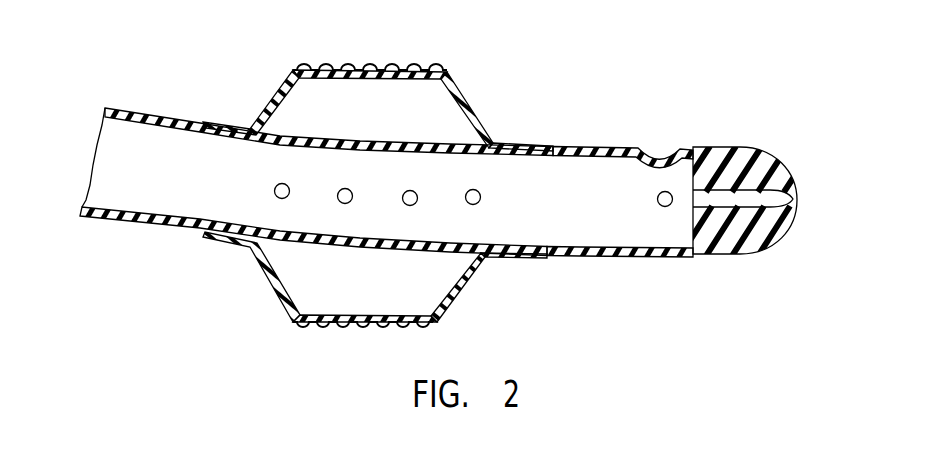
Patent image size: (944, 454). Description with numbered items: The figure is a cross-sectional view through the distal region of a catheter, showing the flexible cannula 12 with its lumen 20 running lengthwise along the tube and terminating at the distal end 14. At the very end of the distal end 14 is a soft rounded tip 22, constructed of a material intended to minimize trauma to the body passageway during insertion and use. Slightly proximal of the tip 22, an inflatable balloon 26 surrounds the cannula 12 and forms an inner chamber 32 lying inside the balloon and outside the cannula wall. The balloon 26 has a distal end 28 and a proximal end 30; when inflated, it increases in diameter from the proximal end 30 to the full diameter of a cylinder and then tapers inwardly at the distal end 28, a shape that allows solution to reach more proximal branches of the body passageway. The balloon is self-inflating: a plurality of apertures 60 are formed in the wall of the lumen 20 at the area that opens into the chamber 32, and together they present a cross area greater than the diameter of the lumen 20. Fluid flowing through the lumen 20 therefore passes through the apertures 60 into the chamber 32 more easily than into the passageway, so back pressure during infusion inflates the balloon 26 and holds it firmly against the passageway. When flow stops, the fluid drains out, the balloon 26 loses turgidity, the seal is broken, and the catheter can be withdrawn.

The flexible cannula 12 is at (150, 228).
The distal end 14 is at (458, 195).
The lumen 20 is at (610, 197).
The tip 22 is at (793, 183).
The inflatable balloon 26 is at (472, 98).
The distal end of balloon 28 is at (450, 132).
The proximal end of balloon 30 is at (252, 128).
The inner chamber 32 is at (340, 97).
The aperture 60 is at (338, 197).